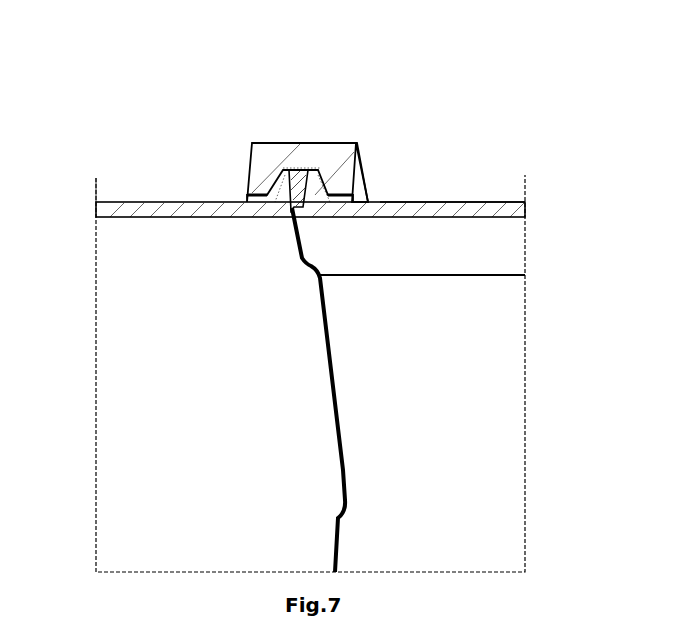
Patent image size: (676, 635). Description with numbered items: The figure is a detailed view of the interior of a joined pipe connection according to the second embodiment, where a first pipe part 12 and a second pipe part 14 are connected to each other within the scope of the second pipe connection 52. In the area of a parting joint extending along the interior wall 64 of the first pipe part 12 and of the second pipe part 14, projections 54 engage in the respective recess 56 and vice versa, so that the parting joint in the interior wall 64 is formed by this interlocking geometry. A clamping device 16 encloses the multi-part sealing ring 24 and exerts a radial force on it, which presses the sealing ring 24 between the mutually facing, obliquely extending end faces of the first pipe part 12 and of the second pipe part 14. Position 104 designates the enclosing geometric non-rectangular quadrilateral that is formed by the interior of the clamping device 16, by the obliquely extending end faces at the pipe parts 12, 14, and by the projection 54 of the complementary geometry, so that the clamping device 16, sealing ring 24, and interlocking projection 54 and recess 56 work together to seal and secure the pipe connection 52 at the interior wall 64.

The second pipe connection 52 is at (205, 107).
The first pipe part 12 is at (152, 203).
The second pipe part 14 is at (429, 203).
The clamping device 16 is at (336, 143).
The multi-part sealing ring 24 is at (300, 167).
The enclosing geometric non-rectangular quadrilateral 104 is at (366, 155).
The projection 54 is at (298, 250).
The recess 56 is at (308, 240).
The interior wall 64 is at (125, 297).